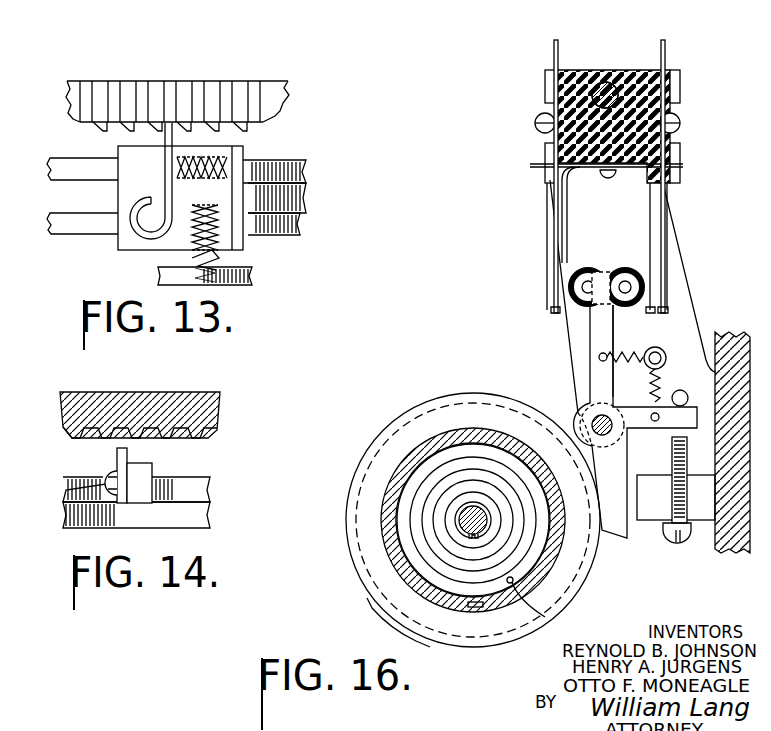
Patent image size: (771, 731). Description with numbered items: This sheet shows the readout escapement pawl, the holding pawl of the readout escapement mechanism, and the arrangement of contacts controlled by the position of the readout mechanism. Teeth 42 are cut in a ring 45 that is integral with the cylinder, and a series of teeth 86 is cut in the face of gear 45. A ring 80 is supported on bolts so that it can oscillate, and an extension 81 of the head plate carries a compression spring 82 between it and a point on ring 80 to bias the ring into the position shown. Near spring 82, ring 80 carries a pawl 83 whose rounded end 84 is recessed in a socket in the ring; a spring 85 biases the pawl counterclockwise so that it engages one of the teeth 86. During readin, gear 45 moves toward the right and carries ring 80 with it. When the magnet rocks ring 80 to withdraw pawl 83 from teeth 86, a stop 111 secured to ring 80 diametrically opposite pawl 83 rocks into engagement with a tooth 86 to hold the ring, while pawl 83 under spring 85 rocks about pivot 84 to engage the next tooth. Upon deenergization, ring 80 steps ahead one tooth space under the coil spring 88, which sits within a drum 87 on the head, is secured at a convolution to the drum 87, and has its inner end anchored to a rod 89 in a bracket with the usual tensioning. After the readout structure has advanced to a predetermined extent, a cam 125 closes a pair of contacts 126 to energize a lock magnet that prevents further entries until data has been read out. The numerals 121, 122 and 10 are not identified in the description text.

In FIG. 13, the teeth 42 is at (200, 81).
In FIG. 13, the ring 45 is at (282, 102).
In FIG. 14, the ring 45 is at (62, 398).
In FIG. 13, the teeth 86 is at (122, 130).
In FIG. 14, the teeth 86 is at (66, 437).
In FIG. 13, the pawl 83 is at (165, 163).
In FIG. 13, the rounded end 84 is at (151, 218).
In FIG. 13, the spring 85 is at (190, 180).
In FIG. 13, the ring 80 is at (306, 178).
In FIG. 14, the ring 80 is at (190, 480).
In FIG. 13, the compression spring 82 is at (222, 259).
In FIG. 13, the extension 81 is at (247, 283).
In FIG. 14, the stop 111 is at (117, 455).
In FIG. 16, the contacts 126 is at (572, 248).
In FIG. 16, the rods 121 is at (665, 275).
In FIG. 16, the cam 125 is at (466, 393).
In FIG. 16, the pitch circle 122 is at (523, 410).
In FIG. 16, the drum 87 is at (557, 577).
In FIG. 16, the rod 89 is at (487, 523).
In FIG. 16, the spring 88 is at (545, 618).
In FIG. 16, the housing 10 is at (715, 550).